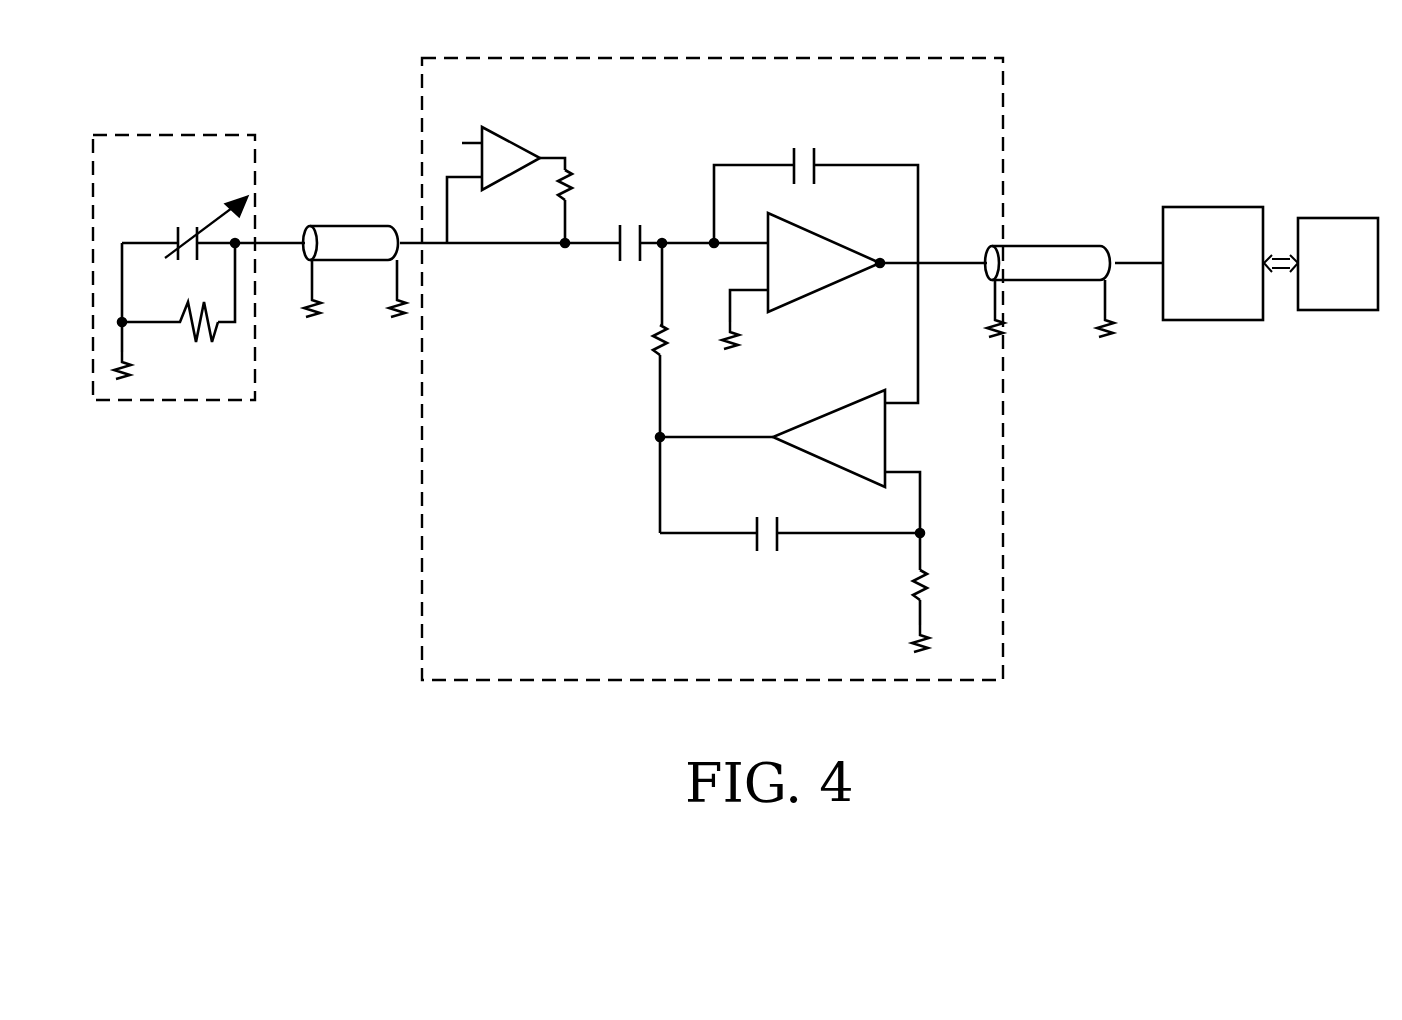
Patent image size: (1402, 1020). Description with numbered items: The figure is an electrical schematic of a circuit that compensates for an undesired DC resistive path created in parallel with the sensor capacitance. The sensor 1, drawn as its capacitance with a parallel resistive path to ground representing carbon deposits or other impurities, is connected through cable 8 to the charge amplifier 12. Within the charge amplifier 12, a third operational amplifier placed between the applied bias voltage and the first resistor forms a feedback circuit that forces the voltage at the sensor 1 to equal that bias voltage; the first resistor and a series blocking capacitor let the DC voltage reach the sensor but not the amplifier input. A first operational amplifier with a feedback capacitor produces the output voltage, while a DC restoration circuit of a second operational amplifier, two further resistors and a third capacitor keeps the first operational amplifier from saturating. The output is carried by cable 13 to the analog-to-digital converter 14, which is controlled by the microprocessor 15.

The sensor 1 is at (157, 408).
The cable 8 is at (349, 215).
The charge amplifier 12 is at (392, 505).
The cable 13 is at (1055, 240).
The analog-to-digital converter 14 is at (1213, 200).
The microprocessor 15 is at (1340, 210).